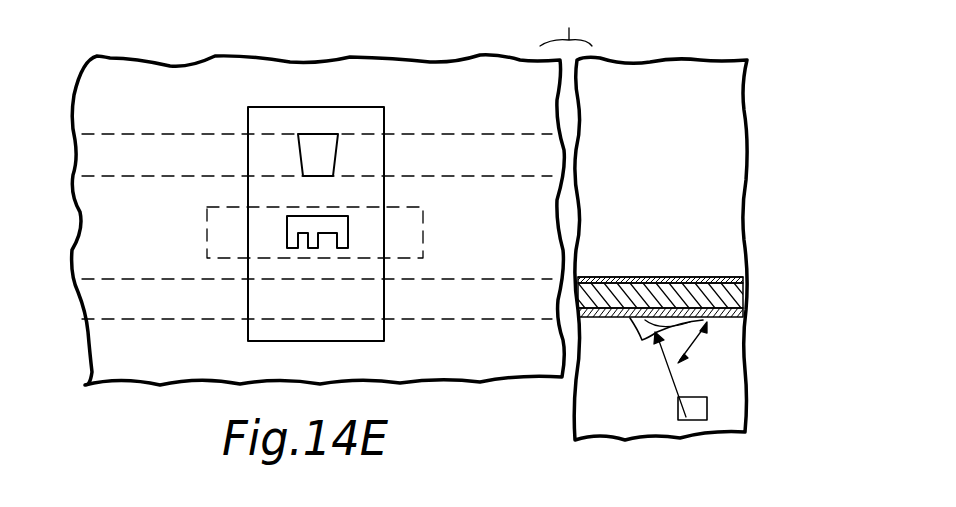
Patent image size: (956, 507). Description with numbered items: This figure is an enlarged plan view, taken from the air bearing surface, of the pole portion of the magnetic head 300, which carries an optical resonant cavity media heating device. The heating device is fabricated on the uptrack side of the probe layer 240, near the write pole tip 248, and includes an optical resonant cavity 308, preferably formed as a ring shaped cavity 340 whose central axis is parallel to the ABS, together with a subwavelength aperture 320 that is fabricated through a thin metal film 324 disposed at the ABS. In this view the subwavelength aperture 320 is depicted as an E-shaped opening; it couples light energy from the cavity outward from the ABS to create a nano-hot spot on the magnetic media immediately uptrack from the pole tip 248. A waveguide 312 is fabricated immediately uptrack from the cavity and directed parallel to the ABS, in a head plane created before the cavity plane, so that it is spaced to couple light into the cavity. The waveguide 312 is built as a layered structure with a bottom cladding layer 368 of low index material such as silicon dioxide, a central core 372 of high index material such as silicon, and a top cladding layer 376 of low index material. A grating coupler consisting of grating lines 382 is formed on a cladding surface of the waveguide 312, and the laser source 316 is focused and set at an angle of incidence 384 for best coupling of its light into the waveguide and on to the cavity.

The magnetic head 300 is at (186, 55).
The probe layer 240 is at (432, 133).
The write pole tip 248 is at (315, 146).
The ring shaped cavity 340 is at (255, 220).
The optical resonant cavity 308 is at (207, 233).
The subwavelength aperture 320 is at (348, 231).
The metal film 324 is at (255, 330).
The waveguide 312 is at (530, 278).
The top cladding layer 376 is at (743, 279).
The central core 372 is at (730, 297).
The bottom cladding layer 368 is at (743, 313).
The grating lines 382 is at (649, 352).
The angle of incidence 384 is at (703, 343).
The laser source 316 is at (707, 405).